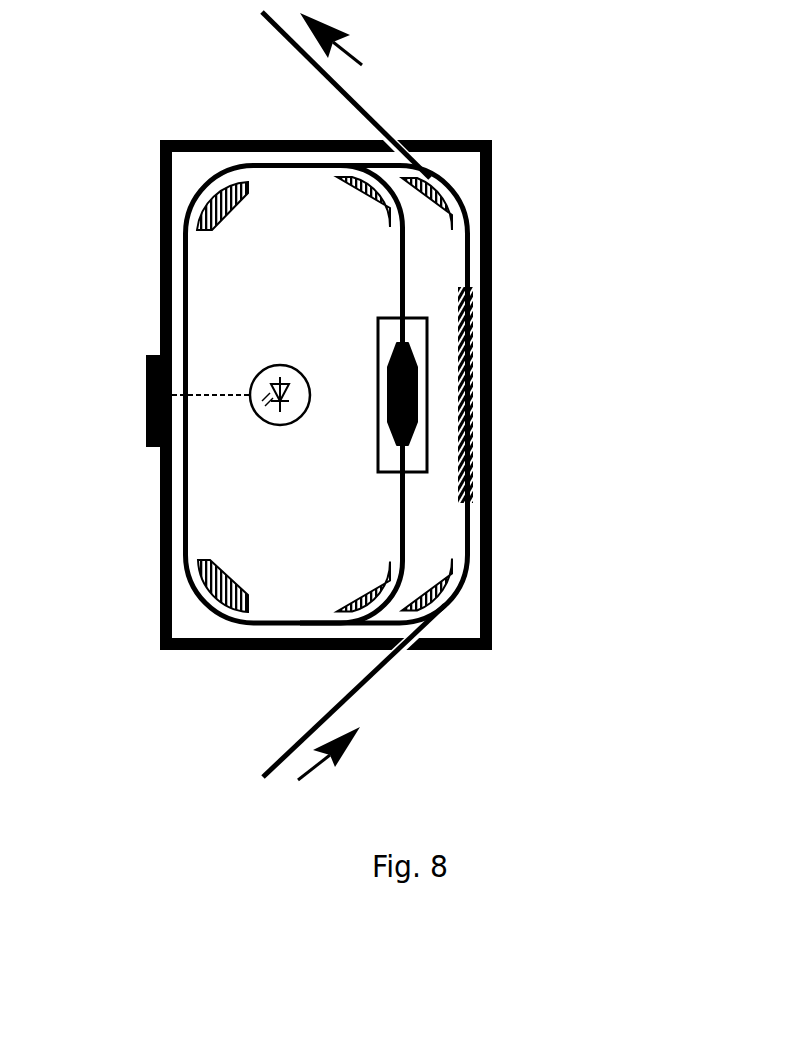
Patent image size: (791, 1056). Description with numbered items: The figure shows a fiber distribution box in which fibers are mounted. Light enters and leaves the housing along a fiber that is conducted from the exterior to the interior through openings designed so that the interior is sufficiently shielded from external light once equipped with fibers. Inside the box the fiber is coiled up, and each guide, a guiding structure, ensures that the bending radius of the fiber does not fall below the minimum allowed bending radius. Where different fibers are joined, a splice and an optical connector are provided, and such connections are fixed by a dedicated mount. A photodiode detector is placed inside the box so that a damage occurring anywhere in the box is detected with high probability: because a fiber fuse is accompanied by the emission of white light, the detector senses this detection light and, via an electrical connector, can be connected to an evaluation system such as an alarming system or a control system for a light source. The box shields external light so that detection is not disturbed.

The element fiber is at (212, 178).
The element light is at (360, 397).
The guiding structure guide is at (235, 587).
The element splice is at (473, 365).
The element mount is at (378, 382).
The element detector is at (293, 409).